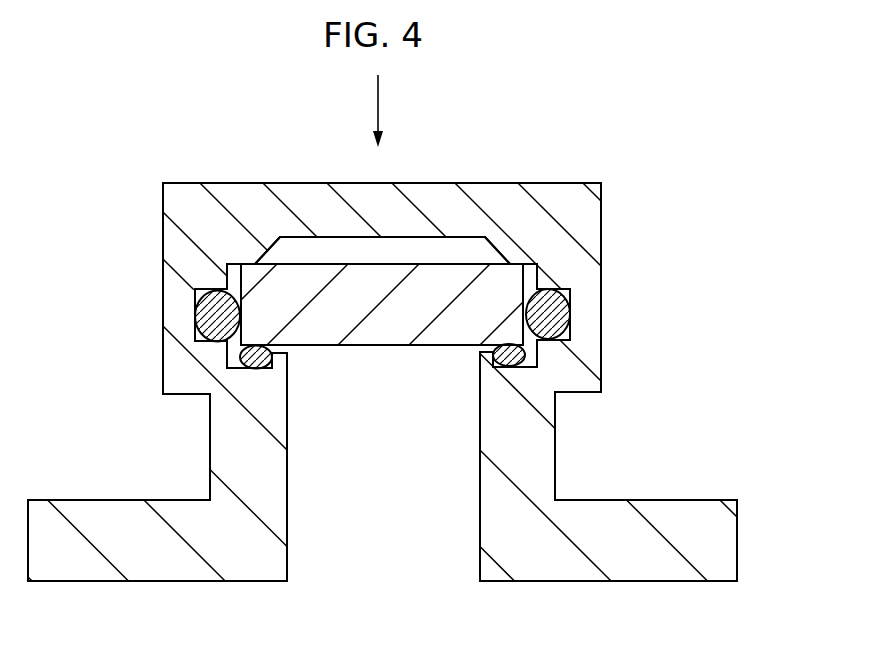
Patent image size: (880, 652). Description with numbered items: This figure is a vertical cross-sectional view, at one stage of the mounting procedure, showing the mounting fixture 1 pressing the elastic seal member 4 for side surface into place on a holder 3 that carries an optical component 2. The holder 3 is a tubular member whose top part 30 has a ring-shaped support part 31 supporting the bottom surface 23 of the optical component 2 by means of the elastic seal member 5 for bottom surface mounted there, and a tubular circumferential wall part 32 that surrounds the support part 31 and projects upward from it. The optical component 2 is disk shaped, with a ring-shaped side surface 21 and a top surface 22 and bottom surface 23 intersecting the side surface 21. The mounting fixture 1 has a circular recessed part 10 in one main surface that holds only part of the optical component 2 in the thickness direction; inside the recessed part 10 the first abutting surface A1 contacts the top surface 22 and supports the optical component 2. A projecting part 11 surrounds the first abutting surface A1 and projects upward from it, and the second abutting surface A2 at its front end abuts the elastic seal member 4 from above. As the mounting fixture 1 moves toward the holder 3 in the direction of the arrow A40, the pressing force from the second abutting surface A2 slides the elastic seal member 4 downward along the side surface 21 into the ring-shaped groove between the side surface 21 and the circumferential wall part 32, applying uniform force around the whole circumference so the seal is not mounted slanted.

The mounting fixture 1 is at (143, 166).
The optical component 2 is at (333, 256).
The holder 3 is at (130, 475).
The elastic seal member for side surface 4 is at (206, 322).
The elastic seal member for bottom surface 5 is at (238, 362).
The recessed part 10 is at (407, 261).
The projecting part 11 is at (575, 282).
The side surface 21 is at (537, 264).
The top surface 22 is at (435, 261).
The bottom surface 23 is at (410, 346).
The top part 30 is at (625, 343).
The support part 31 is at (530, 382).
The circumferential wall part 32 is at (587, 313).
The first abutting surface A1 is at (223, 277).
The second abutting surface A2 is at (196, 291).
The arrow A40 is at (378, 100).